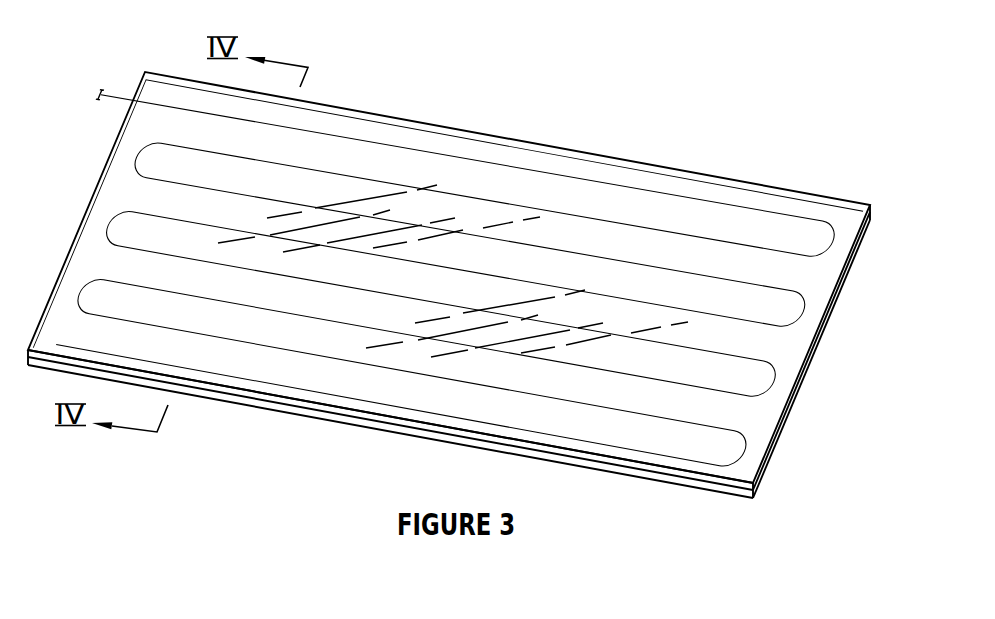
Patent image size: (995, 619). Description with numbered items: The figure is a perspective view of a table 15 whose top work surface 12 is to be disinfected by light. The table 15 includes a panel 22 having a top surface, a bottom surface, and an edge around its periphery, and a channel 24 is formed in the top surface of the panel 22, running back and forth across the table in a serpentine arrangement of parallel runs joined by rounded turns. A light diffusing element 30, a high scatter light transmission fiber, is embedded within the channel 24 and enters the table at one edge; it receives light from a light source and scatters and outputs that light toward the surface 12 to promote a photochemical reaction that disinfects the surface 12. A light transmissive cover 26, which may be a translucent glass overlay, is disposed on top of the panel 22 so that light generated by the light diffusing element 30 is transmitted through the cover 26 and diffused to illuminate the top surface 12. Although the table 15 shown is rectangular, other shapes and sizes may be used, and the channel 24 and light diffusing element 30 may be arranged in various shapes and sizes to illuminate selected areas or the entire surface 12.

The surface 12 is at (589, 170).
The table 15 is at (430, 112).
The panel 22 is at (662, 481).
The channel 24 is at (435, 256).
The light transmissive cover 26 is at (728, 483).
The light diffusing element 30 is at (113, 93).